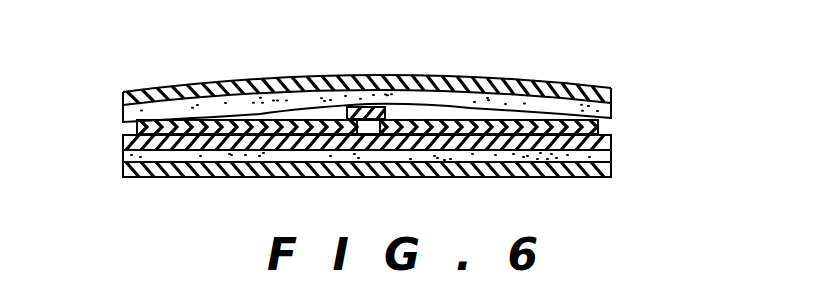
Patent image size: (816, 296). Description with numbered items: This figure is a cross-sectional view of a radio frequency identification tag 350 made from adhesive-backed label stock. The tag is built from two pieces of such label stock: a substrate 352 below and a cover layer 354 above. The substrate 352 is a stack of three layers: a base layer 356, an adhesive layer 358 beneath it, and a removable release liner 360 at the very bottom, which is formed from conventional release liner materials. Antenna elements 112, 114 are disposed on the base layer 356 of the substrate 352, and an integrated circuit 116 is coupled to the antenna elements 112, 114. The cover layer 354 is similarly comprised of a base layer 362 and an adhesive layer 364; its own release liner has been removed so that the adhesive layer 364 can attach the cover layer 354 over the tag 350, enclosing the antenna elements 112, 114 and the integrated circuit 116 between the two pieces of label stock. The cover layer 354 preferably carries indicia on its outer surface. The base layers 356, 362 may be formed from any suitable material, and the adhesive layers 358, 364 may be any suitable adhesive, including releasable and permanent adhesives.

The radio frequency identification tag 350 is at (636, 70).
The cover layer 354 is at (615, 82).
The base layer 362 is at (149, 102).
The adhesive layer 364 is at (122, 112).
The integrated circuit 116 is at (363, 110).
The base layer 356 is at (291, 135).
The substrate 352 is at (118, 135).
The antenna element 114 is at (182, 130).
The antenna element 112 is at (513, 133).
The adhesive layer 358 is at (606, 154).
The release liner 360 is at (580, 170).